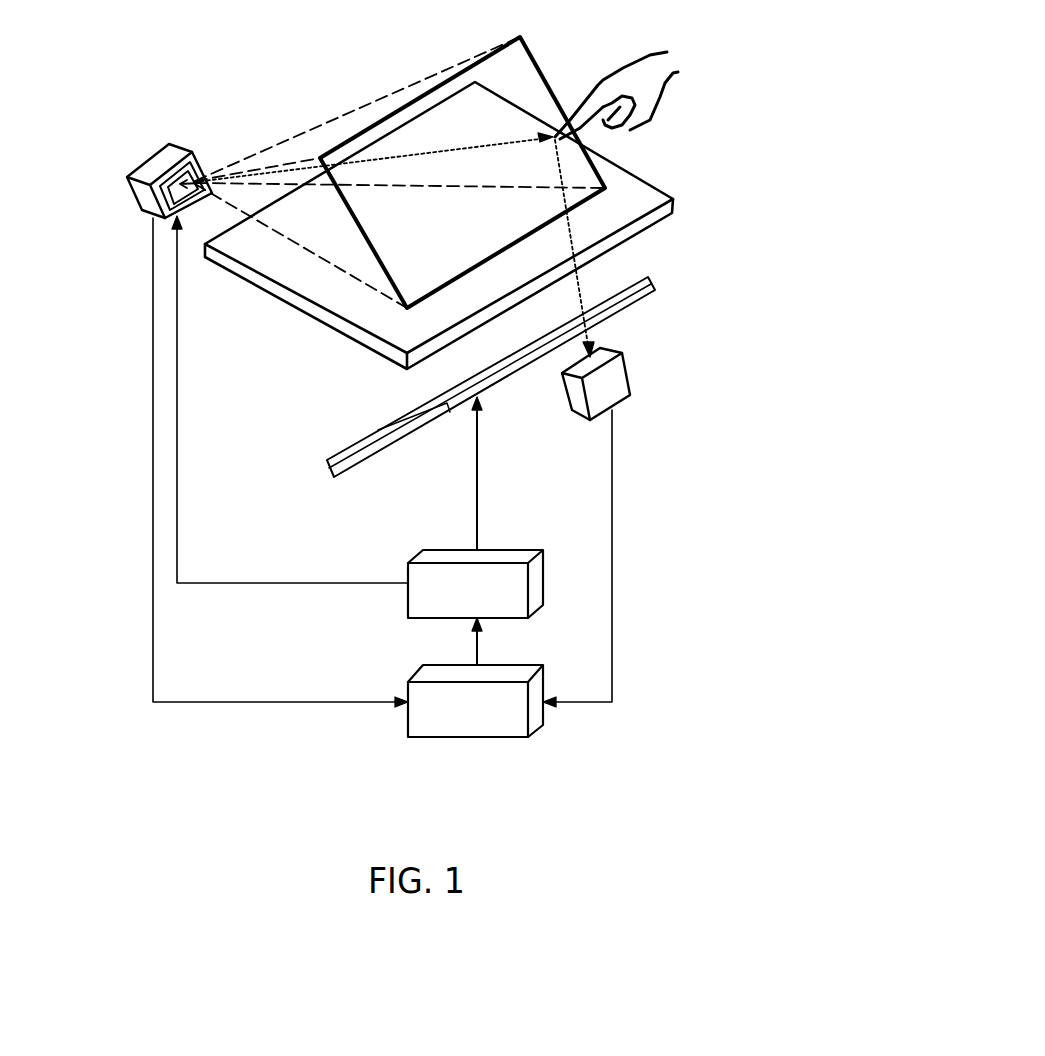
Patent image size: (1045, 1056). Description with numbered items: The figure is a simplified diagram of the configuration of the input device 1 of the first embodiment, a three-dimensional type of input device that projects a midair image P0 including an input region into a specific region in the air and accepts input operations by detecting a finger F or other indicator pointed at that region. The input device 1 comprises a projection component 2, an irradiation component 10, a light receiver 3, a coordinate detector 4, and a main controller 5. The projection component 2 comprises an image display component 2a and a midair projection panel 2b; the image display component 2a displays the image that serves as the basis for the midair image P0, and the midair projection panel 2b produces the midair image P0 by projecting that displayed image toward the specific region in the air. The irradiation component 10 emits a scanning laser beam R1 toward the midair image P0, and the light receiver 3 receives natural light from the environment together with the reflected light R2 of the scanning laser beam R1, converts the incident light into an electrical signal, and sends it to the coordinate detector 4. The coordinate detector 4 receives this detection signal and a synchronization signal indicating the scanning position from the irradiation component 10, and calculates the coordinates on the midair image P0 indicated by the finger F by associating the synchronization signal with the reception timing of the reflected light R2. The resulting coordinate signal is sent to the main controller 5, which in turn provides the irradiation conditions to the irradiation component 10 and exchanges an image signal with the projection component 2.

The input device 1 is at (742, 114).
The projection component 2 is at (735, 195).
The image display component 2a is at (660, 283).
The midair projection panel 2b is at (675, 202).
The light receiver 3 is at (631, 376).
The coordinate detector 4 is at (450, 738).
The main controller 5 is at (545, 580).
The irradiation component 10 is at (126, 175).
The midair image P0 is at (533, 53).
The finger F is at (587, 98).
The scanning laser beam R1 is at (472, 145).
The reflected light R2 is at (580, 286).